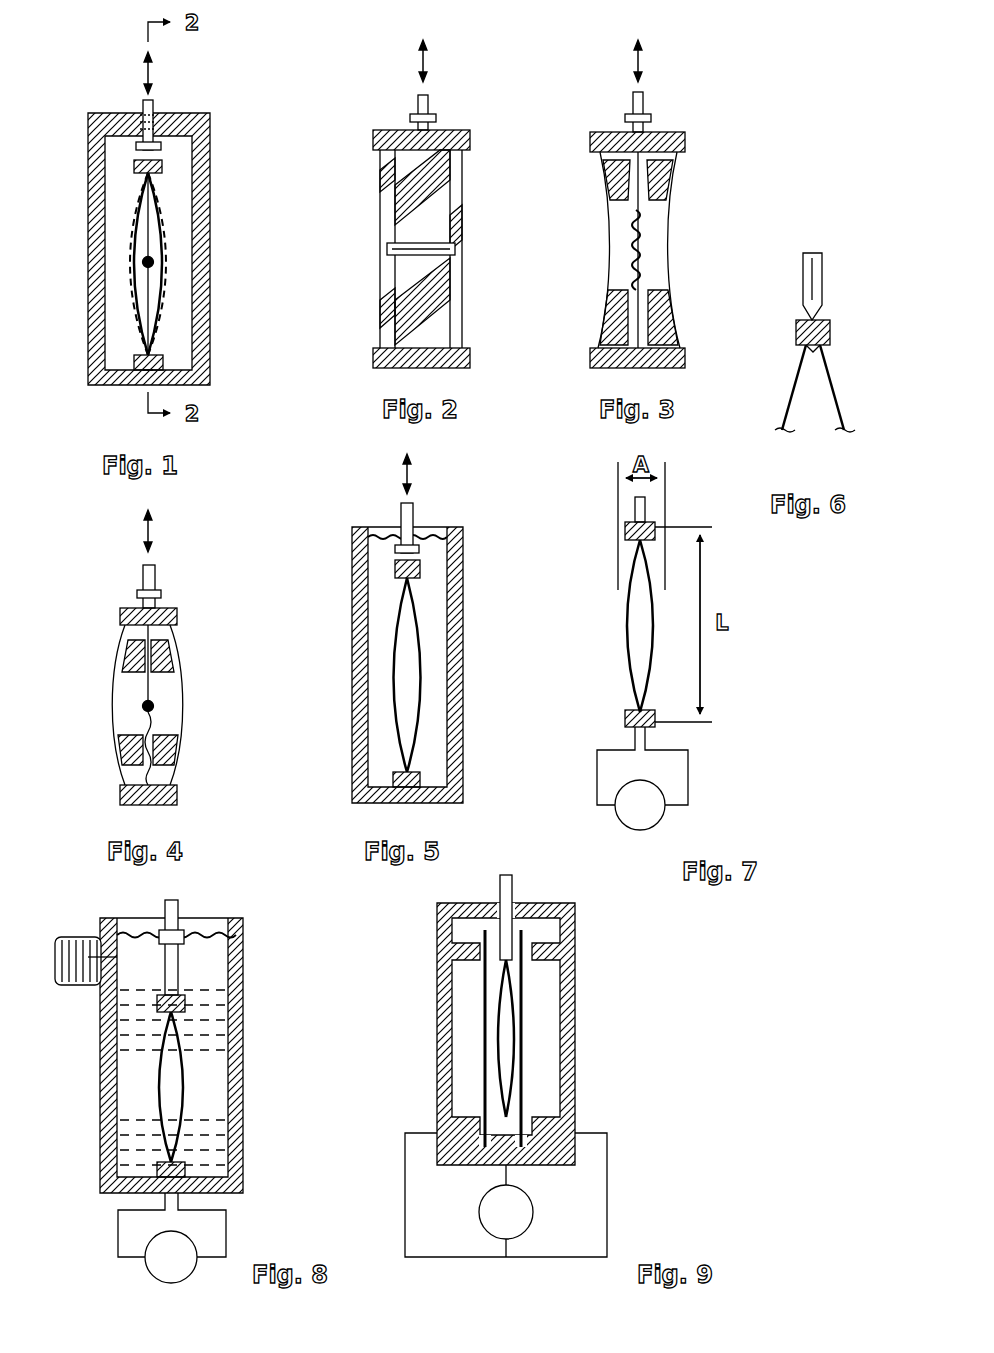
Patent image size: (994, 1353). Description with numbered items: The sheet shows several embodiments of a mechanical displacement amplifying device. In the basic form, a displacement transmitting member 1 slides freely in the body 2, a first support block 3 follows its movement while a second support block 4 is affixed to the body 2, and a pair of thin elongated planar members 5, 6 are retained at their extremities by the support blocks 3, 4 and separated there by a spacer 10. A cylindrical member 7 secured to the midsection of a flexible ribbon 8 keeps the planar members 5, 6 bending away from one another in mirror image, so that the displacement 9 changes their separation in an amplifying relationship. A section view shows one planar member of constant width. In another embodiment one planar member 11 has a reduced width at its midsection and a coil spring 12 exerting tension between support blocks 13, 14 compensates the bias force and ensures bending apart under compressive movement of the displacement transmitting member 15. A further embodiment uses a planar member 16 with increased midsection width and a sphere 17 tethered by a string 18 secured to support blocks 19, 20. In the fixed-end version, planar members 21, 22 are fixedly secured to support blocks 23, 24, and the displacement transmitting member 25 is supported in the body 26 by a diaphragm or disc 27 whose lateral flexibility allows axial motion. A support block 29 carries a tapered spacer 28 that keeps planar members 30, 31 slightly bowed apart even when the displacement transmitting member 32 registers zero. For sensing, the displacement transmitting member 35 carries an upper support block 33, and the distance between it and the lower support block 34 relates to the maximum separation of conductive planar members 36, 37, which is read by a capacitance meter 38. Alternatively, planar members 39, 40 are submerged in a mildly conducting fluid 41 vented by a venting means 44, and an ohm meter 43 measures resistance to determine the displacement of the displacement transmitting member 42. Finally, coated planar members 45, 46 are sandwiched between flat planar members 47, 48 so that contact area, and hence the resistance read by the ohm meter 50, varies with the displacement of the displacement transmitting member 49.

In FIG. 1, the displacement transmitting member 1 is at (142, 105).
In FIG. 2, the displacement transmitting member 1 is at (415, 115).
In FIG. 1, the body 2 is at (186, 113).
In FIG. 2, the body 2 is at (456, 130).
In FIG. 1, the first support block 3 is at (133, 166).
In FIG. 2, the first support block 3 is at (375, 140).
In FIG. 1, the second support block 4 is at (164, 360).
In FIG. 2, the second support block 4 is at (373, 355).
In FIG. 1, the thin elongated planar member 5 is at (126, 232).
In FIG. 1, the thin elongated planar member 6 is at (170, 236).
In FIG. 2, the thin elongated planar member 6 is at (390, 265).
In FIG. 1, the cylindrical member 7 is at (153, 264).
In FIG. 2, the cylindrical member 7 is at (432, 256).
In FIG. 1, the flexible ribbon 8 is at (128, 290).
In FIG. 2, the flexible ribbon 8 is at (430, 202).
In FIG. 1, the displacement 9 is at (146, 70).
In FIG. 2, the displacement 9 is at (420, 62).
In FIG. 1, the spacer 10 is at (148, 372).
In FIG. 3, the thin planar member 11 is at (618, 205).
In FIG. 3, the coil spring 12 is at (660, 240).
In FIG. 3, the support block 13 is at (605, 132).
In FIG. 3, the support block 14 is at (600, 355).
In FIG. 3, the displacement transmitting member 15 is at (648, 105).
In FIG. 4, the thin planar member 16 is at (125, 686).
In FIG. 4, the sphere 17 is at (154, 708).
In FIG. 4, the string 18 is at (153, 686).
In FIG. 4, the support block 19 is at (120, 616).
In FIG. 4, the support block 20 is at (120, 793).
In FIG. 5, the thin planar member 21 is at (390, 678).
In FIG. 5, the thin planar member 22 is at (424, 678).
In FIG. 5, the support block 23 is at (395, 568).
In FIG. 5, the support block 24 is at (393, 778).
In FIG. 5, the displacement transmitting member 25 is at (400, 512).
In FIG. 5, the body 26 is at (464, 616).
In FIG. 5, the diaphragm or disc 27 is at (437, 530).
In FIG. 6, the spacer 28 is at (815, 355).
In FIG. 6, the support block 29 is at (797, 330).
In FIG. 6, the thin planar member 30 is at (790, 395).
In FIG. 6, the thin planar member 31 is at (840, 400).
In FIG. 6, the displacement transmitting member 32 is at (815, 253).
In FIG. 7, the upper block 33 is at (625, 532).
In FIG. 7, the support block 34 is at (625, 720).
In FIG. 7, the displacement transmitting member 35 is at (635, 508).
In FIG. 7, the thin planar member 36 is at (624, 682).
In FIG. 7, the thin planar member 37 is at (657, 682).
In FIG. 7, the capacitance meter 38 is at (662, 818).
In FIG. 8, the thin planar member 39 is at (152, 1086).
In FIG. 8, the thin planar member 40 is at (190, 1086).
In FIG. 8, the mildly conducting fluid 41 is at (130, 1145).
In FIG. 8, the displacement transmitting member 42 is at (178, 908).
In FIG. 8, the ohm meter 43 is at (147, 1268).
In FIG. 8, the venting means 44 is at (55, 958).
In FIG. 9, the thin planar member 45 is at (485, 990).
In FIG. 9, the thin planar member 46 is at (521, 990).
In FIG. 9, the thin flat planar member 47 is at (492, 1090).
In FIG. 9, the thin flat planar member 48 is at (520, 1090).
In FIG. 9, the displacement transmitting member 49 is at (512, 888).
In FIG. 9, the ohm meter 50 is at (607, 1202).